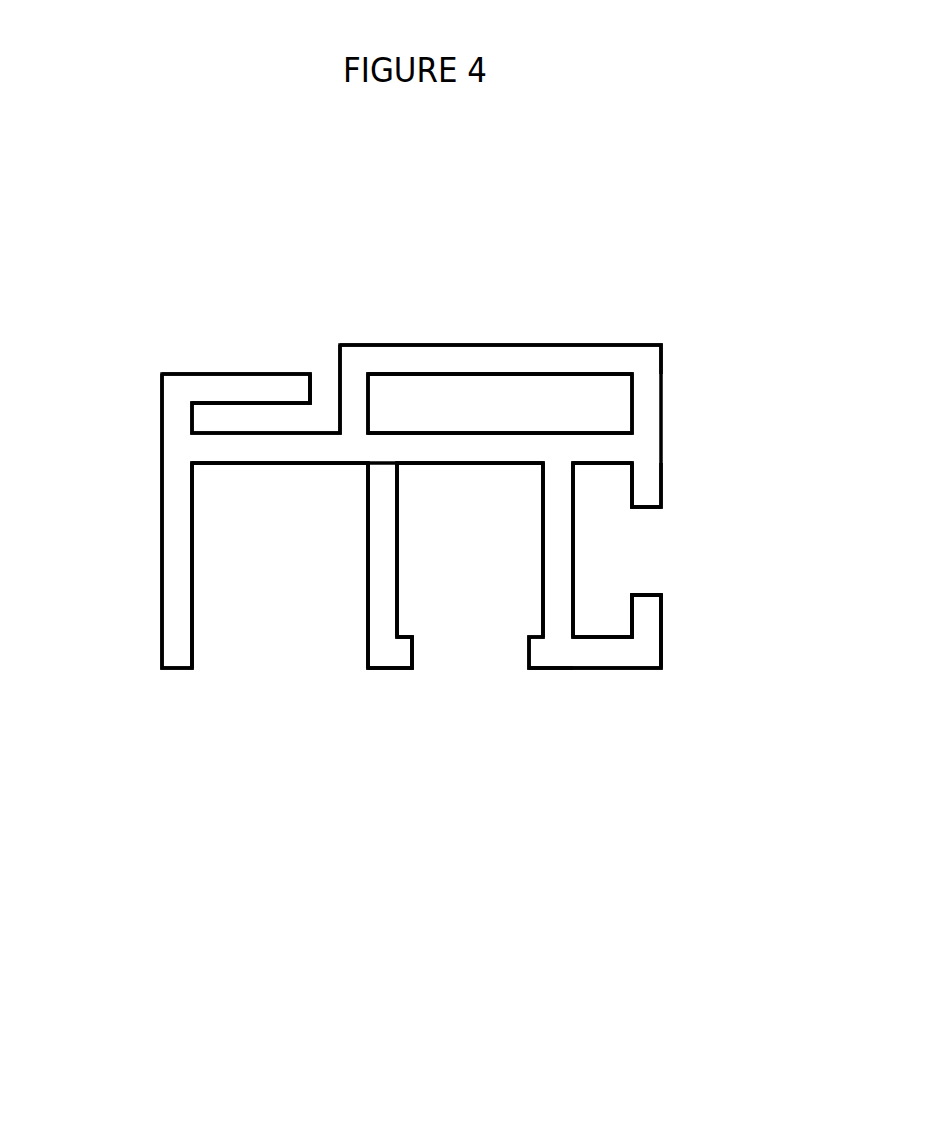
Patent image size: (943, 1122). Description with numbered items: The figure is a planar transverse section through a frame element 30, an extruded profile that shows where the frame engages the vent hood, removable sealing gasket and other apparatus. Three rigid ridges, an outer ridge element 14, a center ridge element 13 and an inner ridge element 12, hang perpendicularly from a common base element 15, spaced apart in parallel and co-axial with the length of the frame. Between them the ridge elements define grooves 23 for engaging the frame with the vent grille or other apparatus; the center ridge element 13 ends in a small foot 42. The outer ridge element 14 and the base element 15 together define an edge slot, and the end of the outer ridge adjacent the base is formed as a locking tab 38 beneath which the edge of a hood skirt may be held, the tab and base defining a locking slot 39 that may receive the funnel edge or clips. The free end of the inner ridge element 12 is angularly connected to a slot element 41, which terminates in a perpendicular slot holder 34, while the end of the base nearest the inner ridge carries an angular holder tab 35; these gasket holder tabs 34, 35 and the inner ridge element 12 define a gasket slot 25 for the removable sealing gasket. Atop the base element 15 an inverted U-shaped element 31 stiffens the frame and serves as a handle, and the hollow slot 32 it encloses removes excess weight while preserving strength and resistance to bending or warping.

The inner ridge element 12 is at (579, 682).
The center ridge element 13 is at (341, 672).
The outer ridge element 14 is at (114, 579).
The base element 15 is at (412, 345).
The grooves 23 is at (333, 718).
The gasket slot 25 is at (682, 550).
The frame member 30 is at (431, 407).
The U-shaped element 31 is at (565, 351).
The slot 32 is at (565, 415).
The slot holder 34 is at (717, 707).
The holder tab 35 is at (706, 500).
The locking tab 38 is at (197, 352).
The locking slot 39 is at (278, 293).
The slot element 41 is at (595, 698).
The foot 42 is at (382, 744).